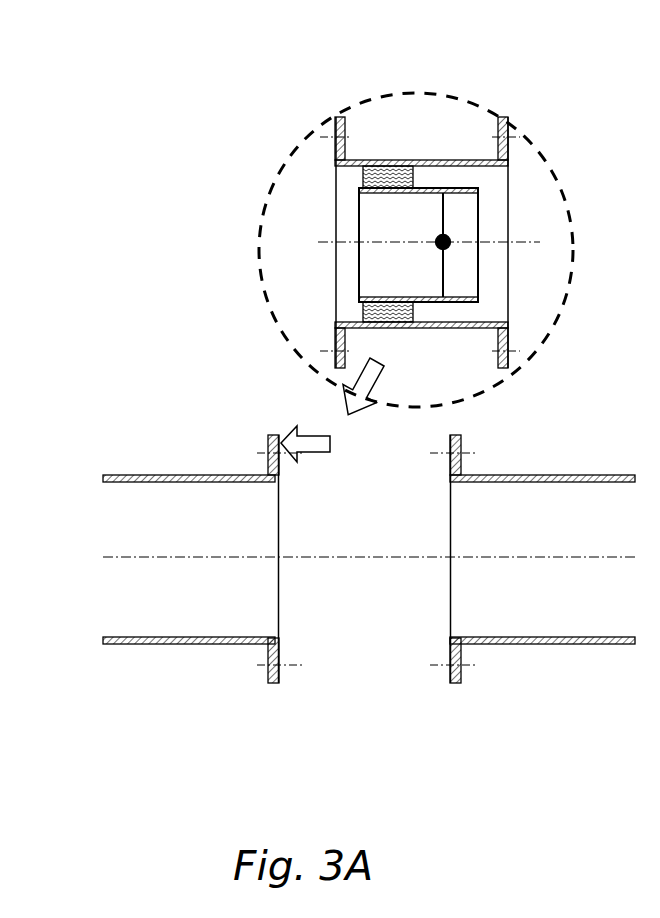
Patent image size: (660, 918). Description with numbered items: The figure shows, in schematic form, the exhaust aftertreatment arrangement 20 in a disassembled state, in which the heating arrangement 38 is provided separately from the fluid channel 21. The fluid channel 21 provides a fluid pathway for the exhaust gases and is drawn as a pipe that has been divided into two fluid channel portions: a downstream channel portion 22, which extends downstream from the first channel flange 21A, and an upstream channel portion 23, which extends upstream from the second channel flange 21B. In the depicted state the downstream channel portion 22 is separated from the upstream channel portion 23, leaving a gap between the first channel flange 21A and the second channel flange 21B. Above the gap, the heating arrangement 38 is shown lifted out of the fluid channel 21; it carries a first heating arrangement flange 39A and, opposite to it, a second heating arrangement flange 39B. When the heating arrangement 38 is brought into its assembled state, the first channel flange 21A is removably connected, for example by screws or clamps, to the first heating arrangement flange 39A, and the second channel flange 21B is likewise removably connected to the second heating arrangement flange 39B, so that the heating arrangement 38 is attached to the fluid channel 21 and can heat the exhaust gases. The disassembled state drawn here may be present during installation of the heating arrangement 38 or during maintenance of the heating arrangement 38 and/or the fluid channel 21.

The exhaust aftertreatment arrangement 20 is at (619, 345).
The fluid channel 21 is at (369, 572).
The first channel flange 21A is at (268, 683).
The second channel flange 21B is at (452, 683).
The downstream channel portion 22 is at (133, 644).
The upstream channel portion 23 is at (528, 644).
The heating arrangement 38 is at (380, 160).
The first heating arrangement flange 39A is at (333, 118).
The second heating arrangement flange 39B is at (512, 147).